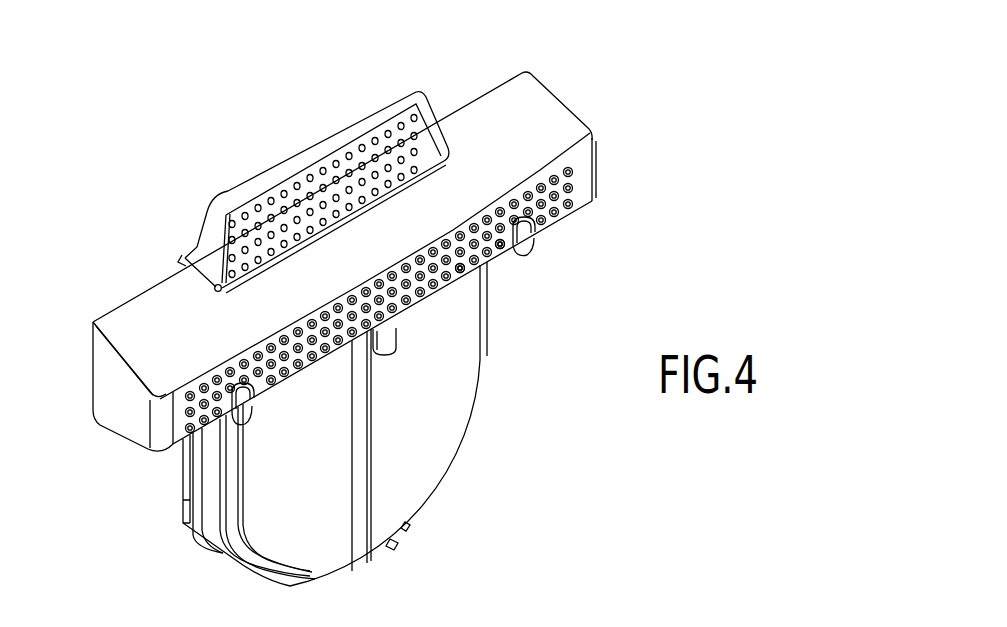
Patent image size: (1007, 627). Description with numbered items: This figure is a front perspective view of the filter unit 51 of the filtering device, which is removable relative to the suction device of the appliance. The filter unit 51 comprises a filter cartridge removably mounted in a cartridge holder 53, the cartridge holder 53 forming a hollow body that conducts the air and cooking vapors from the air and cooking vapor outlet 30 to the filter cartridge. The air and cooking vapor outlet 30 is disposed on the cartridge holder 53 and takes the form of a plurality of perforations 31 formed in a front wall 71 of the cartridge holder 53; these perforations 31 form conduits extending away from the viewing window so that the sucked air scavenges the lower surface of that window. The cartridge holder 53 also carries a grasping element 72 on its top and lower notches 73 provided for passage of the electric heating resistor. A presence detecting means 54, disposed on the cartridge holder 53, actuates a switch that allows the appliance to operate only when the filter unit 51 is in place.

The filter unit 51 is at (572, 78).
The cartridge holder 53 is at (590, 124).
The front wall 71 is at (586, 178).
The grasping element 72 is at (327, 143).
The lower notches 73 is at (528, 240).
The perforations 31 is at (497, 252).
The air and cooking vapor outlet 30 is at (422, 308).
The presence detecting means 54 is at (390, 548).